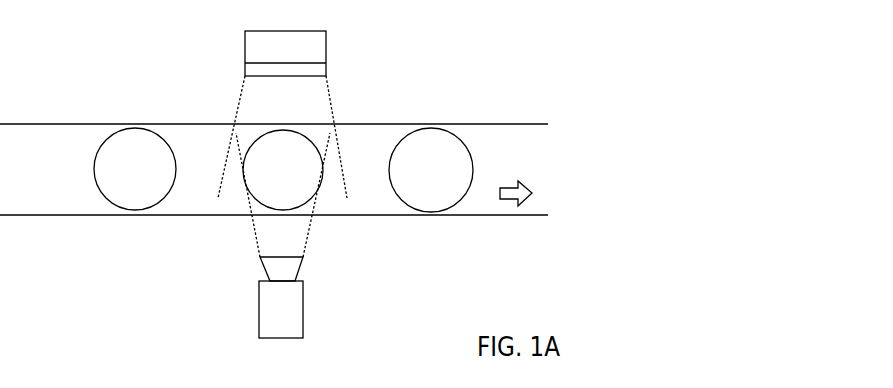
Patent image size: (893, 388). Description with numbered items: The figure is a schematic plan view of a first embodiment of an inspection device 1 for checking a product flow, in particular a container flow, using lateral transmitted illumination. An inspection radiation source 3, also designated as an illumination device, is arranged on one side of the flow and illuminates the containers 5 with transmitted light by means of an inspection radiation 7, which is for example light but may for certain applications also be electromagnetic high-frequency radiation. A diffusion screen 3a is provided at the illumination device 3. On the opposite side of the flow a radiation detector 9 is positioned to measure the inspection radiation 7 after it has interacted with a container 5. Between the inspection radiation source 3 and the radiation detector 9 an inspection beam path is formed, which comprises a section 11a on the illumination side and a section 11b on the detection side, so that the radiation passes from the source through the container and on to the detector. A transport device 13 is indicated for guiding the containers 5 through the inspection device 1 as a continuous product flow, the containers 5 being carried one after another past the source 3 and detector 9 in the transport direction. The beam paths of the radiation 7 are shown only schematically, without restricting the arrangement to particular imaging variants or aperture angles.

The inspection device 1 is at (515, 42).
The inspection radiation source 3 is at (320, 45).
The diffusion screen 3a is at (245, 69).
The container 5 is at (431, 132).
The inspection radiation 7 is at (331, 98).
The radiation detector 9 is at (296, 317).
The section on the illumination side 11a is at (230, 97).
The section on the detection side 11b is at (240, 227).
The transport device 13 is at (41, 127).